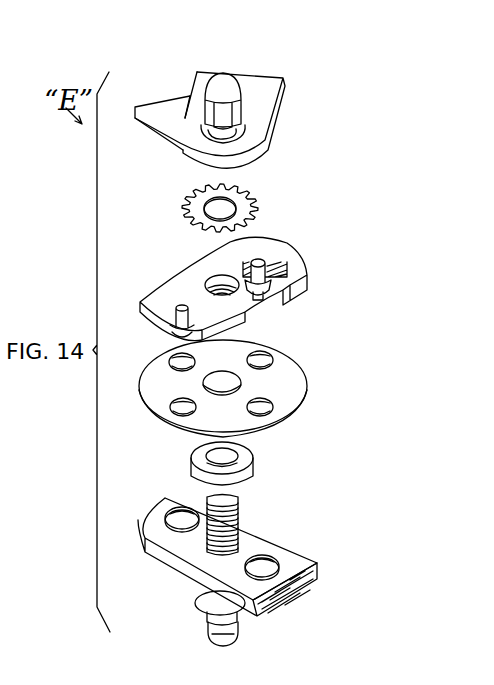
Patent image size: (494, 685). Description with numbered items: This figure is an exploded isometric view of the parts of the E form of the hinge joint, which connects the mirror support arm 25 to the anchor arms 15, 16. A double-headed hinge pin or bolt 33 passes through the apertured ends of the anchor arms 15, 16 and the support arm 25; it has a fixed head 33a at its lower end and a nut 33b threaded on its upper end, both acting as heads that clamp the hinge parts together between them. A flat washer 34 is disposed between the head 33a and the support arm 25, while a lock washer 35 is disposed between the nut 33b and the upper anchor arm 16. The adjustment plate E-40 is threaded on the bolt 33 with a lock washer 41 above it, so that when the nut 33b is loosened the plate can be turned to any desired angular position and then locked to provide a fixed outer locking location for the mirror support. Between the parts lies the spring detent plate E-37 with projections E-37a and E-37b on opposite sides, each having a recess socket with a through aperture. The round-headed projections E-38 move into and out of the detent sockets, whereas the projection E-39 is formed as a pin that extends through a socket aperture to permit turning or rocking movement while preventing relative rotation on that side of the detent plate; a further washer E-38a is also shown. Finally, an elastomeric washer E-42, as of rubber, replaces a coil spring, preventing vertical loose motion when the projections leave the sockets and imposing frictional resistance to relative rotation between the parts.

The anchor arm 15 is at (166, 108).
The upper anchor arm 16 is at (264, 104).
The nut 33b is at (235, 82).
The lock washer 35 is at (246, 133).
The lock washer 41 is at (250, 200).
The adjustment plate E-40 is at (287, 258).
The pin projection E-39 is at (268, 303).
The projection E-37a is at (172, 360).
The projection E-37b is at (272, 358).
The spring detent plate E-37 is at (152, 400).
The elastomeric washer E-42 is at (254, 468).
The hinge bolt 33 is at (239, 515).
The round-headed projection E-38 is at (178, 511).
The washer E-38a is at (237, 518).
The support arm 25 is at (170, 557).
The flat washer 34 is at (196, 605).
The head 33a is at (236, 636).